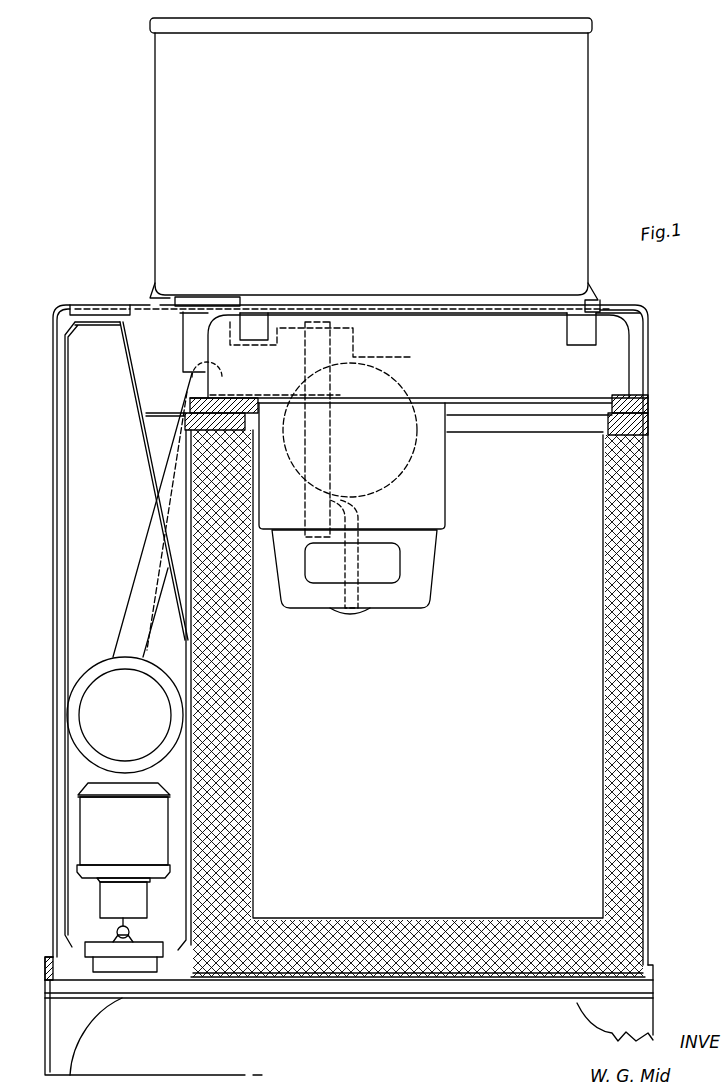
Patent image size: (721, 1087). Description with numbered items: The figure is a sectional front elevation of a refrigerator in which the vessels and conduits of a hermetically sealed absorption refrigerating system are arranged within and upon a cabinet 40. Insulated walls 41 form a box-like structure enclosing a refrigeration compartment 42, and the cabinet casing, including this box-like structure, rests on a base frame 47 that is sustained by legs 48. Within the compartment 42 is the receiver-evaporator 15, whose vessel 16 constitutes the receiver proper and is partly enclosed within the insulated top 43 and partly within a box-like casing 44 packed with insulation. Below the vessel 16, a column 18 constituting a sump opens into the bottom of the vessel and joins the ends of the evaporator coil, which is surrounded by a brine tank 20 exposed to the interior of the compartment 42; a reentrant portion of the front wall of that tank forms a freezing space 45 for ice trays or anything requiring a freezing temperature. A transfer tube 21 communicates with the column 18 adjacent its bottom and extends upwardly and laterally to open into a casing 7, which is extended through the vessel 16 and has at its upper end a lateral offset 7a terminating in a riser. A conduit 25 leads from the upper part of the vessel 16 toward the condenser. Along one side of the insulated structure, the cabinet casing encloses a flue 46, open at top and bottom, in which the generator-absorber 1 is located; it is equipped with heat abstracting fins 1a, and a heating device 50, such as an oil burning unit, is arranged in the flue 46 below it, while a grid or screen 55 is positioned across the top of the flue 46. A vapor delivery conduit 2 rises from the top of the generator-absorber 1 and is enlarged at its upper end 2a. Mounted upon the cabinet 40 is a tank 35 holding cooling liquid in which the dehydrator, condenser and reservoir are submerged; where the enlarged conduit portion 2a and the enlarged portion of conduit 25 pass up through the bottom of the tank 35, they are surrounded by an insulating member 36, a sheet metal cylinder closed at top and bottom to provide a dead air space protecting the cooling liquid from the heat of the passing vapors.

The generator-absorber 1 is at (107, 660).
The heat abstracting fins 1a is at (157, 668).
The vapor delivery conduit 2 is at (143, 590).
The enlarged upper end of vapor delivery conduit 2a is at (183, 349).
The casing 7 is at (330, 432).
The lateral offset 7a is at (275, 352).
The receiver-evaporator 15 is at (432, 520).
The vessel 16 is at (445, 455).
The column 18 is at (345, 596).
The brine tank 20 is at (415, 593).
The transfer tube 21 is at (370, 518).
The conduit 25 is at (362, 338).
The tank 35 is at (590, 127).
The insulating member 36 is at (225, 293).
The cabinet 40 is at (652, 665).
The insulated walls 41 is at (255, 782).
The refrigeration compartment 42 is at (428, 674).
The insulated top 43 is at (615, 366).
The box-like casing 44 is at (432, 484).
The freezing space 45 is at (352, 563).
The flue 46 is at (145, 515).
The base frame 47 is at (317, 990).
The legs 48 is at (82, 1018).
The heating device 50 is at (123, 877).
The grid or screen 55 is at (105, 311).